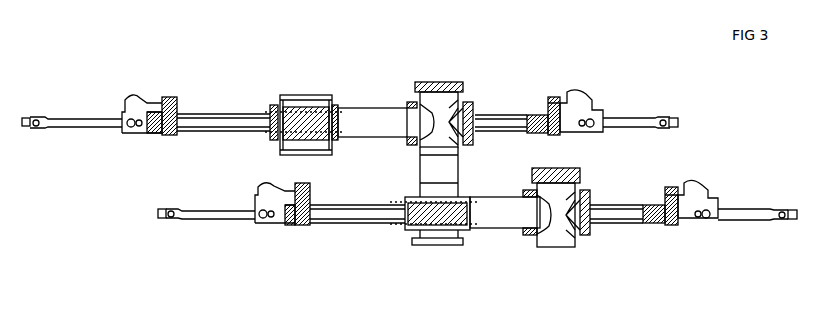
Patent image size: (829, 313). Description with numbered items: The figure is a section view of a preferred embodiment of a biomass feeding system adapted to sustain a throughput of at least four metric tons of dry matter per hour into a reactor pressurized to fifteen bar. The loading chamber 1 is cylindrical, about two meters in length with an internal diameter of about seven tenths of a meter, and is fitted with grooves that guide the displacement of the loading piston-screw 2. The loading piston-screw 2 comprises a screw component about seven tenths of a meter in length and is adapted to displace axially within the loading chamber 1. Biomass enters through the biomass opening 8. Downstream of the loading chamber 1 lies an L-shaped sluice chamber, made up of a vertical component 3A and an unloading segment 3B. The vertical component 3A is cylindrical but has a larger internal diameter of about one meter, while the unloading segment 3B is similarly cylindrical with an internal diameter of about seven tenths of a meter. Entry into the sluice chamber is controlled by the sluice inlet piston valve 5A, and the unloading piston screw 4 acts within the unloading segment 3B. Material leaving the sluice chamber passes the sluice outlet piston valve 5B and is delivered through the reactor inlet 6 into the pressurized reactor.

The loading chamber 1 is at (386, 123).
The loading piston-screw 2 is at (84, 122).
The vertical component of the L-shaped sluice chamber 3A is at (442, 100).
The unloading segment of the L-shaped sluice chamber 3B is at (506, 212).
The unloading piston screw 4 is at (178, 218).
The sluice inlet piston valve 5A is at (634, 121).
The sluice outlet piston valve 5B is at (770, 218).
The reactor inlet 6 is at (559, 236).
The biomass opening 8 is at (307, 95).